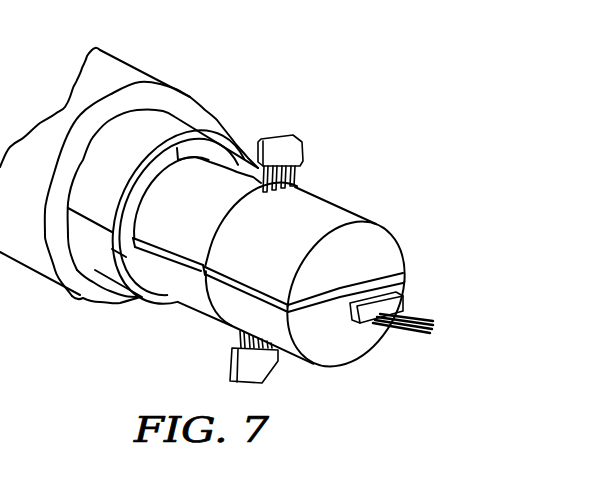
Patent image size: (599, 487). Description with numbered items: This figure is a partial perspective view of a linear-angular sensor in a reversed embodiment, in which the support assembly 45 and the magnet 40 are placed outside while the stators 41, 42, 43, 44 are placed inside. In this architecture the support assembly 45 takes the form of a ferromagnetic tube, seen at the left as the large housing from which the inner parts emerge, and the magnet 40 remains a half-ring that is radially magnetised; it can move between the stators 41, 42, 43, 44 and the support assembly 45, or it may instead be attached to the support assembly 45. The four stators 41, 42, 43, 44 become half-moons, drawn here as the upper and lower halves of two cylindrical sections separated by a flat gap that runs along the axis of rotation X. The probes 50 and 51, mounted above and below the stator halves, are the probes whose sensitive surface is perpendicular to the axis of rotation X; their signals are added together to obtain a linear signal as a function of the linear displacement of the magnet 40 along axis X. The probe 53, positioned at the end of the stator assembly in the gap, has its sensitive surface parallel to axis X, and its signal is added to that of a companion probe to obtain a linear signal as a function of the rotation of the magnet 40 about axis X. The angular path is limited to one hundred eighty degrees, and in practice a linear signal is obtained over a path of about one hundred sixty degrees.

The magnet 40 is at (80, 180).
The stator 41 is at (194, 207).
The stator 42 is at (189, 286).
The stator 43 is at (282, 248).
The stator 44 is at (240, 312).
The support assembly 45 is at (190, 97).
The probe 50 is at (293, 152).
The probe 51 is at (257, 363).
The probe 53 is at (381, 337).